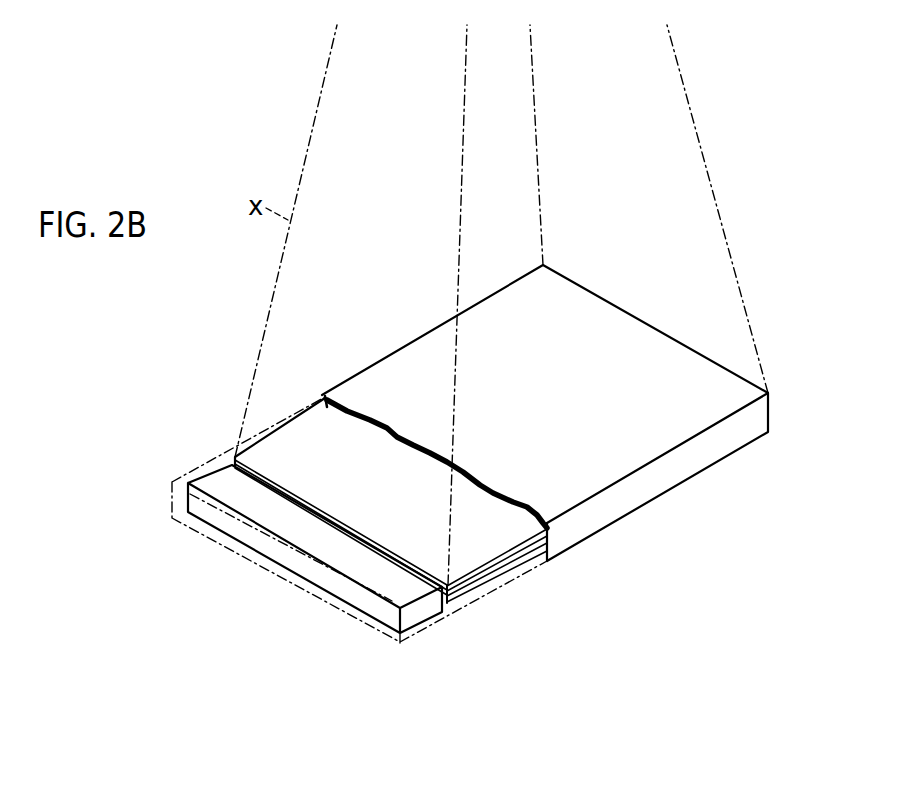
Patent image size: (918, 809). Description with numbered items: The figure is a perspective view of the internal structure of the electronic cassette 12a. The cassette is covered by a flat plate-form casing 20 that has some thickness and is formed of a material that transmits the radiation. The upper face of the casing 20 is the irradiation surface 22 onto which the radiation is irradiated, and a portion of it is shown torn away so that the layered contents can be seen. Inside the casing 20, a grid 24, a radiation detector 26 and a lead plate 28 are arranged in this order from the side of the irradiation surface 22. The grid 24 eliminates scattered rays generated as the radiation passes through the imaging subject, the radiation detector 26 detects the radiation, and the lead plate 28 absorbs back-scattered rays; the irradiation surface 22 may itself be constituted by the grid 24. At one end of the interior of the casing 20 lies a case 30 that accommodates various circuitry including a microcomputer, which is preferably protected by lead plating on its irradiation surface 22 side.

The electronic cassette 12a is at (403, 341).
The casing 20 is at (625, 497).
The irradiation surface 22 is at (627, 331).
The grid 24 is at (488, 504).
The radiation detector 26 is at (517, 563).
The lead plate 28 is at (490, 580).
The case 30 is at (419, 615).